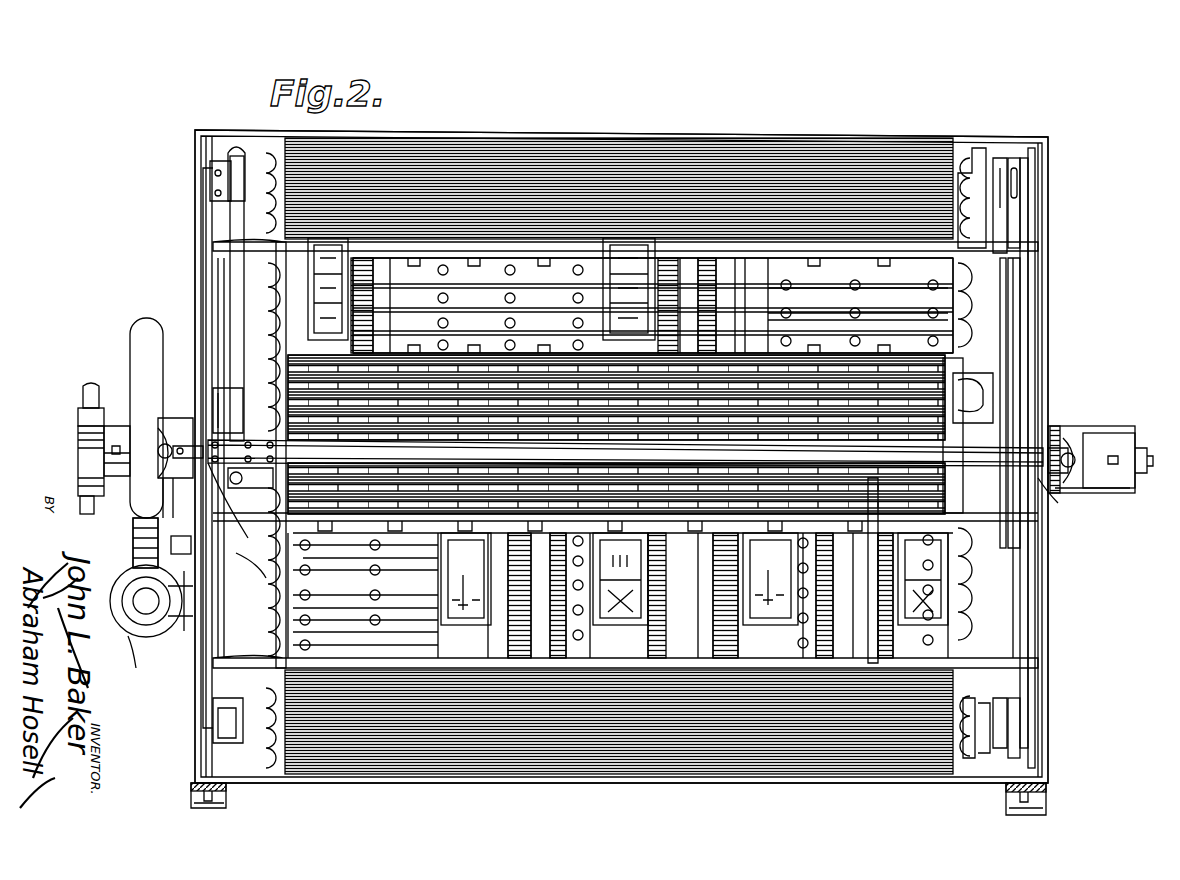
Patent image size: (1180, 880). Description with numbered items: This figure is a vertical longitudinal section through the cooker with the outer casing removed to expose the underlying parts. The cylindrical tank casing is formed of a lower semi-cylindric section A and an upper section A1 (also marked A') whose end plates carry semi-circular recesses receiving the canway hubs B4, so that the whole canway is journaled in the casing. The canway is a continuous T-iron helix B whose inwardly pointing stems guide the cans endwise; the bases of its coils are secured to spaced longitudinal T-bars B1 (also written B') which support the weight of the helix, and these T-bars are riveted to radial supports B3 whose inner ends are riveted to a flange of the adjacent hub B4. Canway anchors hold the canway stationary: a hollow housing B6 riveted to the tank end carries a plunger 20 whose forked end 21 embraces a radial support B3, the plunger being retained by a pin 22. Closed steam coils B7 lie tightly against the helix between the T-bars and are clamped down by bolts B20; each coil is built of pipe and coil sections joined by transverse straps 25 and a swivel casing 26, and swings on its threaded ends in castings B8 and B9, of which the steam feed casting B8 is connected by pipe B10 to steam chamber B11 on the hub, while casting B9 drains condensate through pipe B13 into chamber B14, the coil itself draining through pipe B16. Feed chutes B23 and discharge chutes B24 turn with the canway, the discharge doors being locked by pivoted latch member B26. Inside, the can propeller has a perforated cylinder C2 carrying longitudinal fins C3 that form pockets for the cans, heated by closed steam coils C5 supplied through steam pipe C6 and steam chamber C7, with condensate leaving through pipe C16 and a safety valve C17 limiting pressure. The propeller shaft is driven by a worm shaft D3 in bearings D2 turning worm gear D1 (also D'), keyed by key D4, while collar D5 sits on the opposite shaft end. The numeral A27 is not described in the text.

The upper semi-cylindric casing section A' is at (621, 432).
The upper semi-cylindric casing section A1 is at (1020, 268).
The lower semi-cylindric casing section A is at (642, 685).
The closed steam coil B7 is at (470, 172).
The bolt B20 is at (215, 238).
The steam feed casting B8 is at (229, 134).
The radial support B3 is at (225, 285).
The closed steam coil C5 is at (260, 575).
The feed chute B23 is at (345, 285).
The longitudinal T-bar B' is at (723, 389).
The longitudinal T-bar B1 is at (703, 222).
The discharge chute B24 is at (955, 560).
The pivoted latch member B26 is at (671, 482).
The canway hub B4 is at (175, 350).
The canway anchor housing B6 is at (170, 430).
The pin 22 is at (165, 440).
The plunger 20 is at (160, 455).
The safety valve C17 is at (75, 385).
The coupling A27 is at (115, 425).
The steam chamber C7 is at (72, 425).
The steam pipe C6 is at (72, 488).
The worm gear D' is at (143, 538).
The worm gear D1 is at (127, 538).
The bearing D2 is at (131, 574).
The worm shaft D3 is at (138, 600).
The key D4 is at (140, 645).
The collar D5 is at (1100, 420).
The condensate pipe C16 is at (1157, 481).
The forked plunger end 21 is at (1060, 510).
The T-iron helix canway B is at (625, 585).
The drain pipe B16 is at (1000, 175).
The longitudinal fin C3 is at (350, 550).
The perforated sheet iron cylinder C2 is at (962, 282).
The transverse strap 25 is at (360, 530).
The swivel casing 26 is at (968, 150).
The condensate discharge casting B9 is at (1012, 150).
The drain pipe B13 is at (1000, 300).
The condensate chamber B14 is at (1018, 365).
The steam pipe B10 is at (225, 238).
The steam chamber B11 is at (218, 357).